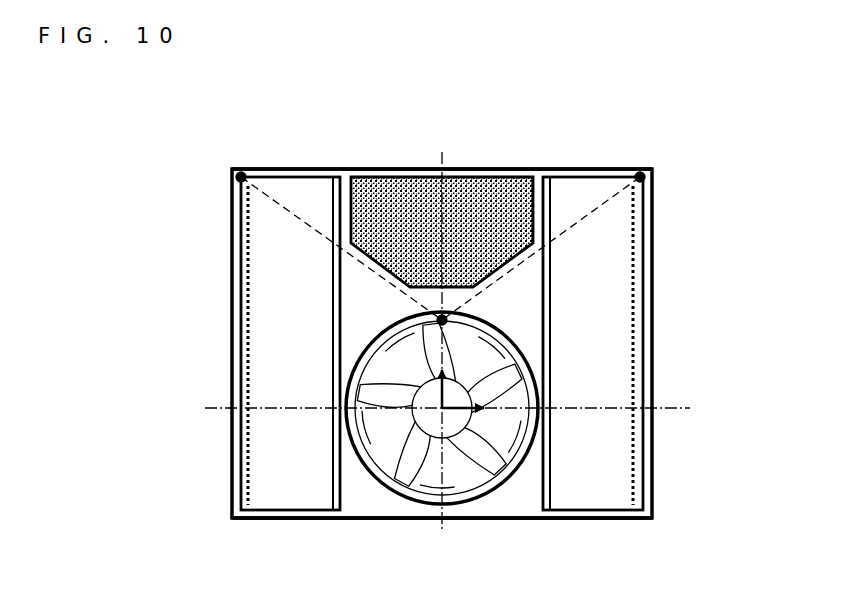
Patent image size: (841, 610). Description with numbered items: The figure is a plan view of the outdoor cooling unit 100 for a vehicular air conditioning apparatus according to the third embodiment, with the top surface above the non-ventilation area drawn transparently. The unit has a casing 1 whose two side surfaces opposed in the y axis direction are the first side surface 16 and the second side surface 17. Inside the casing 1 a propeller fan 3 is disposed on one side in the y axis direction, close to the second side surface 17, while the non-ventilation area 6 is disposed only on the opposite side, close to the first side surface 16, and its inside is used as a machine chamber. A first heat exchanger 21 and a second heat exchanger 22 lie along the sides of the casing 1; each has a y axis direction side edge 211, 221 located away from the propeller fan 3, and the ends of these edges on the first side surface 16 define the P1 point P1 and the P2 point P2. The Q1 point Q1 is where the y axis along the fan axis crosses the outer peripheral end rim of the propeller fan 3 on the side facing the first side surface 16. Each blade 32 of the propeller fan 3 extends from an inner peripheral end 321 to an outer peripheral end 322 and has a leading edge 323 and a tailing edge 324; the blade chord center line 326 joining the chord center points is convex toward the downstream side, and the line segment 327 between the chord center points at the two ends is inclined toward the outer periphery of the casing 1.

The outdoor cooling unit 100 is at (470, 592).
The casing 1 is at (546, 526).
The first side surface 16 is at (318, 172).
The second side surface 17 is at (310, 520).
The first heat exchanger 21 is at (258, 490).
The y axis direction side edge 211 is at (249, 455).
The second heat exchanger 22 is at (617, 487).
The y axis direction side edge 221 is at (645, 432).
The non-ventilation area 6 is at (403, 195).
The P1 point P1 is at (238, 178).
The P2 point P2 is at (644, 177).
The Q1 point Q1 is at (442, 320).
The propeller fan 3 is at (425, 384).
The blade 32 is at (425, 379).
The inner peripheral end 321 is at (376, 410).
The outer peripheral end 322 is at (380, 336).
The leading edge 323 is at (447, 320).
The tailing edge 324 is at (412, 400).
The blade chord center line 326 is at (368, 375).
The line segment 327 is at (524, 352).